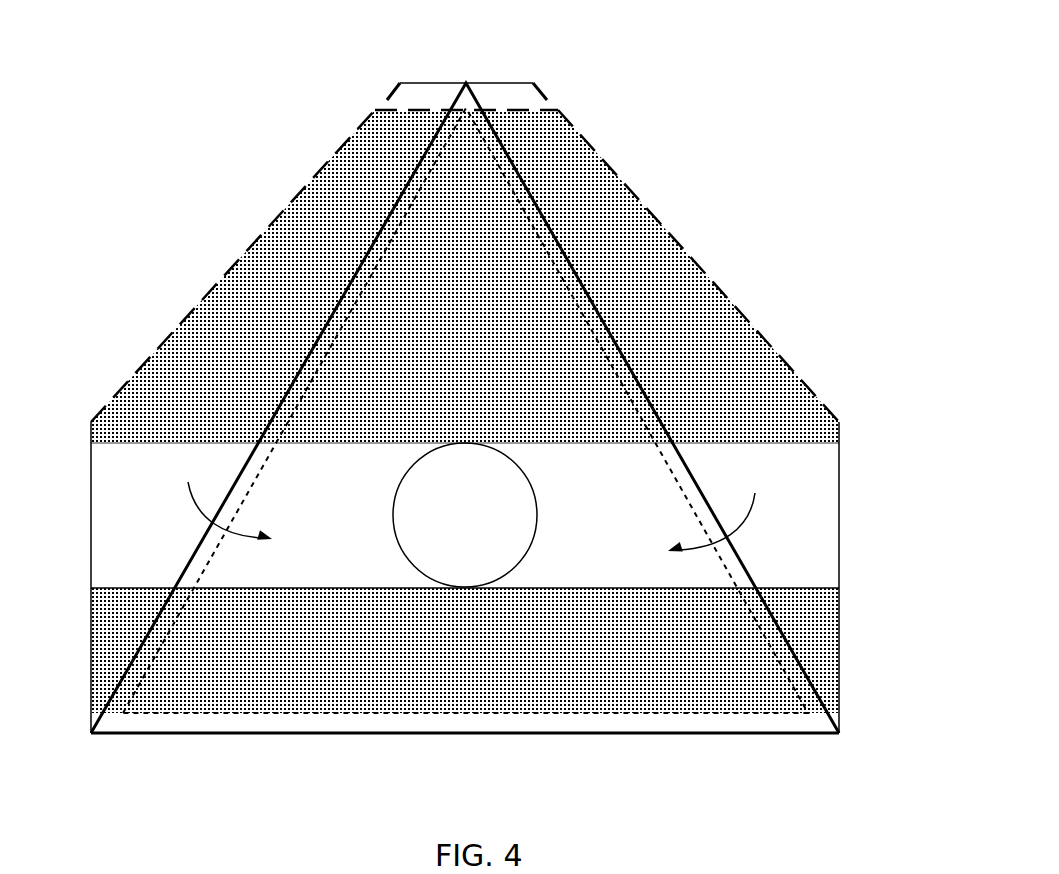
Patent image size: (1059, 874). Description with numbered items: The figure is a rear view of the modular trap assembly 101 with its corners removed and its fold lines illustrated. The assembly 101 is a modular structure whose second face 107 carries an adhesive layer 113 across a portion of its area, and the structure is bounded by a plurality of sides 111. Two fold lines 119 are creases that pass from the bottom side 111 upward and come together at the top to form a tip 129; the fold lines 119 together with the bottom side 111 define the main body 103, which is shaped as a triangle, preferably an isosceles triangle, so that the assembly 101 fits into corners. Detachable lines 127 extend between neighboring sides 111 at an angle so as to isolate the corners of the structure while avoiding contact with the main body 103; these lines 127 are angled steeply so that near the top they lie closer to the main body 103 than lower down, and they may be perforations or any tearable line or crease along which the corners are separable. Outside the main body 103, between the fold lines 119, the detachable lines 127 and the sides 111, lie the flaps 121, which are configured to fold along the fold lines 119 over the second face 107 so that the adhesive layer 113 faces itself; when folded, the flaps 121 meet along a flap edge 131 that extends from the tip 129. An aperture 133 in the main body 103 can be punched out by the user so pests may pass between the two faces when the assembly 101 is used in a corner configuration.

The modular trap assembly 101 is at (706, 45).
The main body 103 is at (283, 740).
The second face 107 is at (116, 562).
The sides 111 is at (91, 625).
The adhesive layer 113 is at (496, 322).
The fold lines 119 is at (268, 415).
The flaps 121 is at (152, 489).
The detachable lines 127 is at (265, 218).
The tip 129 is at (466, 83).
The flap edge 131 is at (421, 83).
The aperture 133 is at (393, 524).